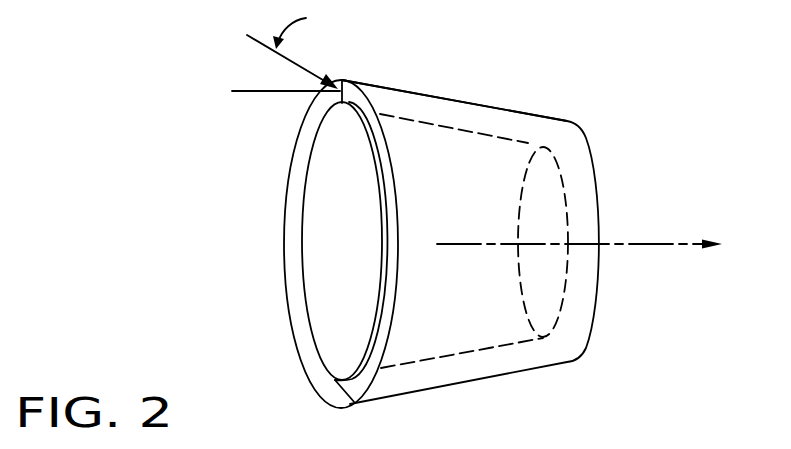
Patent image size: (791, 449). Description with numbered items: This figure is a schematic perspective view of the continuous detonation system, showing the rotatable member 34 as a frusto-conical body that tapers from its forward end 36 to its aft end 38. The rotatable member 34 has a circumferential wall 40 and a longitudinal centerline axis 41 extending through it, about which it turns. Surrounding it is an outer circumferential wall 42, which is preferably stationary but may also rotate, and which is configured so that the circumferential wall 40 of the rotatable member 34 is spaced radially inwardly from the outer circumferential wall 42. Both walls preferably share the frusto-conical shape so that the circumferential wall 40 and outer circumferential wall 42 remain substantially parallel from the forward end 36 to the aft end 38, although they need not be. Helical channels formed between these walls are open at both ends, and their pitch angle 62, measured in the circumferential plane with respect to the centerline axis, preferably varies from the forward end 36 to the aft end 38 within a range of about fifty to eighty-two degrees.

The rotatable member 34 is at (516, 136).
The forward end 36 is at (335, 298).
The aft end 38 is at (566, 200).
The circumferential wall 40 is at (383, 314).
The longitudinal centerline axis 41 is at (627, 243).
The outer circumferential wall 42 is at (443, 95).
The pitch angle 62 is at (261, 96).